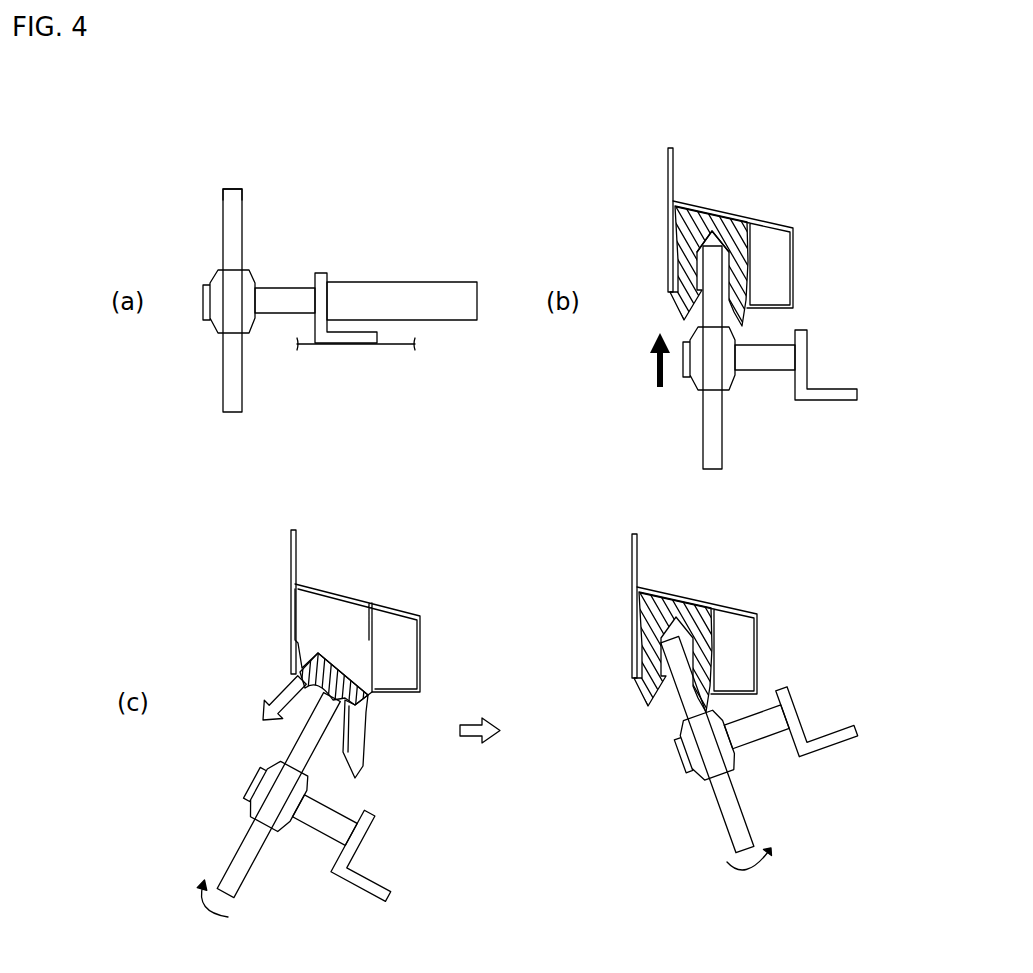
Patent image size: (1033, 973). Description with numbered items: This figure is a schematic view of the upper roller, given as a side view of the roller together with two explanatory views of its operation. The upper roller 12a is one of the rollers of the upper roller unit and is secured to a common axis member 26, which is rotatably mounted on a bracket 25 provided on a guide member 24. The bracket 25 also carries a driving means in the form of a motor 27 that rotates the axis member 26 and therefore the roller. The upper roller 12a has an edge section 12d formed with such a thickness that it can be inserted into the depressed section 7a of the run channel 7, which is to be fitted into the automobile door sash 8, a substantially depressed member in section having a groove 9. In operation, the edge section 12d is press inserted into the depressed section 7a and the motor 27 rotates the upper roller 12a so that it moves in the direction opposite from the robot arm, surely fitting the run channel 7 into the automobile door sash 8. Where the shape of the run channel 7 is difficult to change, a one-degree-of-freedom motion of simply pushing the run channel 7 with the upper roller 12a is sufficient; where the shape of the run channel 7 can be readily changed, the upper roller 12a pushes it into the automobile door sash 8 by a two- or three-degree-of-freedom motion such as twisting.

The upper roller 12a is at (243, 237).
The edge section 12d is at (235, 190).
The guide member 24 is at (327, 345).
The bracket 25 is at (319, 272).
The axis member 26 is at (266, 288).
The motor 27 is at (404, 282).
The run channel 7 is at (730, 228).
The depressed section 7a is at (701, 240).
The automobile door sash 8 is at (667, 218).
The groove 9 is at (335, 603).